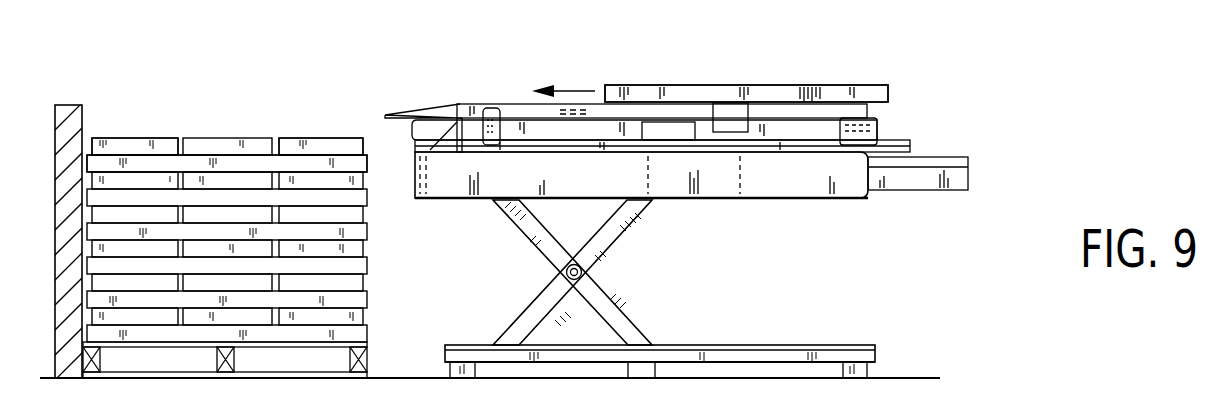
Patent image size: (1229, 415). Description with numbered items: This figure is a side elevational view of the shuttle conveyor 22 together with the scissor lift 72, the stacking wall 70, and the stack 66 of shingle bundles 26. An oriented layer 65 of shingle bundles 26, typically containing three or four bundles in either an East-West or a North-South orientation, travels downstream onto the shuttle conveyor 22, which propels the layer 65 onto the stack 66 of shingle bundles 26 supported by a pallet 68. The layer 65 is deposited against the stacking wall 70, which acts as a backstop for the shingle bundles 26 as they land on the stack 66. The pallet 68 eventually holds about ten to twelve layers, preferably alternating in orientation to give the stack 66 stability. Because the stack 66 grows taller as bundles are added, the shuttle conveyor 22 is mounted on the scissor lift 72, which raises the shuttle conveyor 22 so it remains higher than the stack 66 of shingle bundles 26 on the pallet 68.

The shuttle conveyor 22 is at (437, 84).
The shingle bundles 26 is at (236, 138).
The oriented layer of shingle bundles 65 is at (797, 84).
The stack of shingle bundles 66 is at (370, 214).
The pallet 68 is at (380, 352).
The stacking wall 70 is at (83, 117).
The scissor lift 72 is at (640, 302).